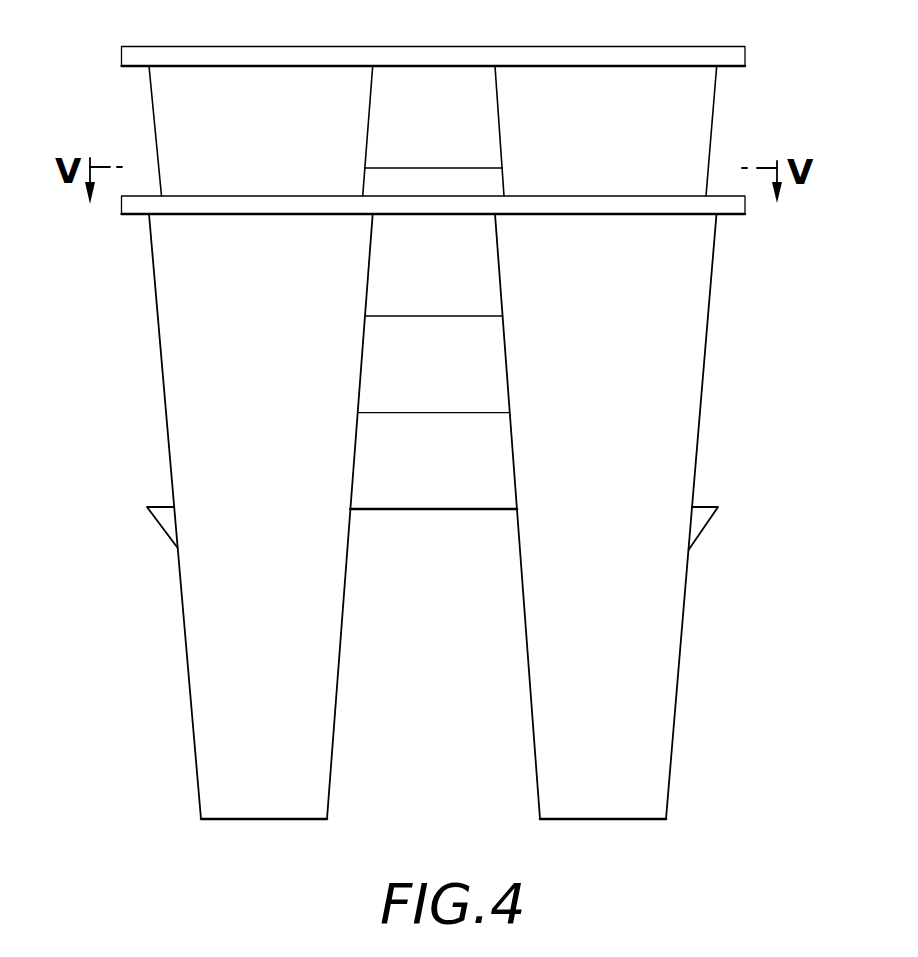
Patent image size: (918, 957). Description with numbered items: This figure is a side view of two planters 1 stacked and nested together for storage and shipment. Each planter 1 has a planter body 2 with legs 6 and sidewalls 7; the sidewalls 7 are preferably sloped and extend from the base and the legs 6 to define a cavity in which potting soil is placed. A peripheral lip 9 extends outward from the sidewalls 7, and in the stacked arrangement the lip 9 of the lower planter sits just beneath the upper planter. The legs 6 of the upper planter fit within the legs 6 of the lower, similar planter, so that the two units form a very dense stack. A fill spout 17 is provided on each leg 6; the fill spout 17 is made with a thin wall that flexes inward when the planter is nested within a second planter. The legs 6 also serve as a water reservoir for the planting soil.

The planter 1 is at (418, 433).
The planter body 2 is at (187, 385).
The legs 6 is at (217, 789).
The sidewalls 7 is at (687, 341).
The peripheral lip 9 is at (737, 204).
The fill spout 17 is at (155, 520).